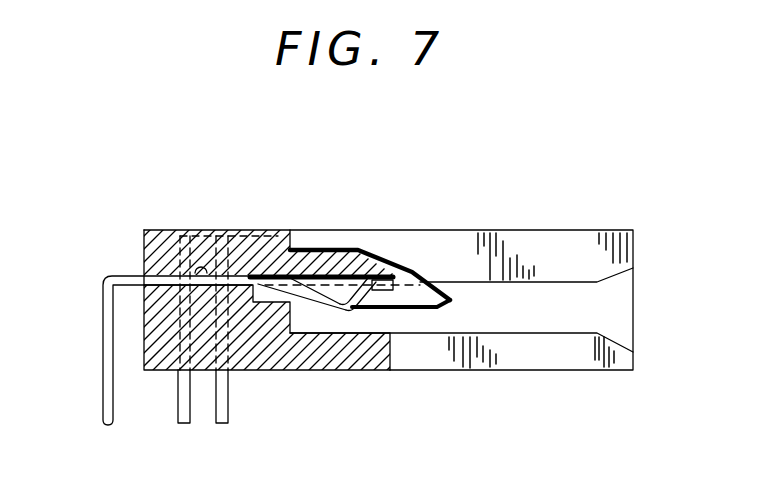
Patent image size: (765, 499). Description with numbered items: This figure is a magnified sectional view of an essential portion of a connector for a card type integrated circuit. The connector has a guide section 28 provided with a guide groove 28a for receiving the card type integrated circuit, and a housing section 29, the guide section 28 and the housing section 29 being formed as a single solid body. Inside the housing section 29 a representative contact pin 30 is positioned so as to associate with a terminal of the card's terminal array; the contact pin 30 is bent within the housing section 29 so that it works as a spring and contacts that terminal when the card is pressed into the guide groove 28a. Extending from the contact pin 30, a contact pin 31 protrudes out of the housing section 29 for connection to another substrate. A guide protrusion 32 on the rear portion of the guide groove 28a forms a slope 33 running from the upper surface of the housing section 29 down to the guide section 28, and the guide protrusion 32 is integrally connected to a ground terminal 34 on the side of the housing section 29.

The guide section 28 is at (598, 244).
The guide groove 28a is at (622, 320).
The housing section 29 is at (340, 257).
The contact pin 30 is at (338, 308).
The contact pin 31 is at (102, 332).
The guide protrusion 32 is at (422, 298).
The slope 33 is at (420, 280).
The ground terminal 34 is at (178, 415).